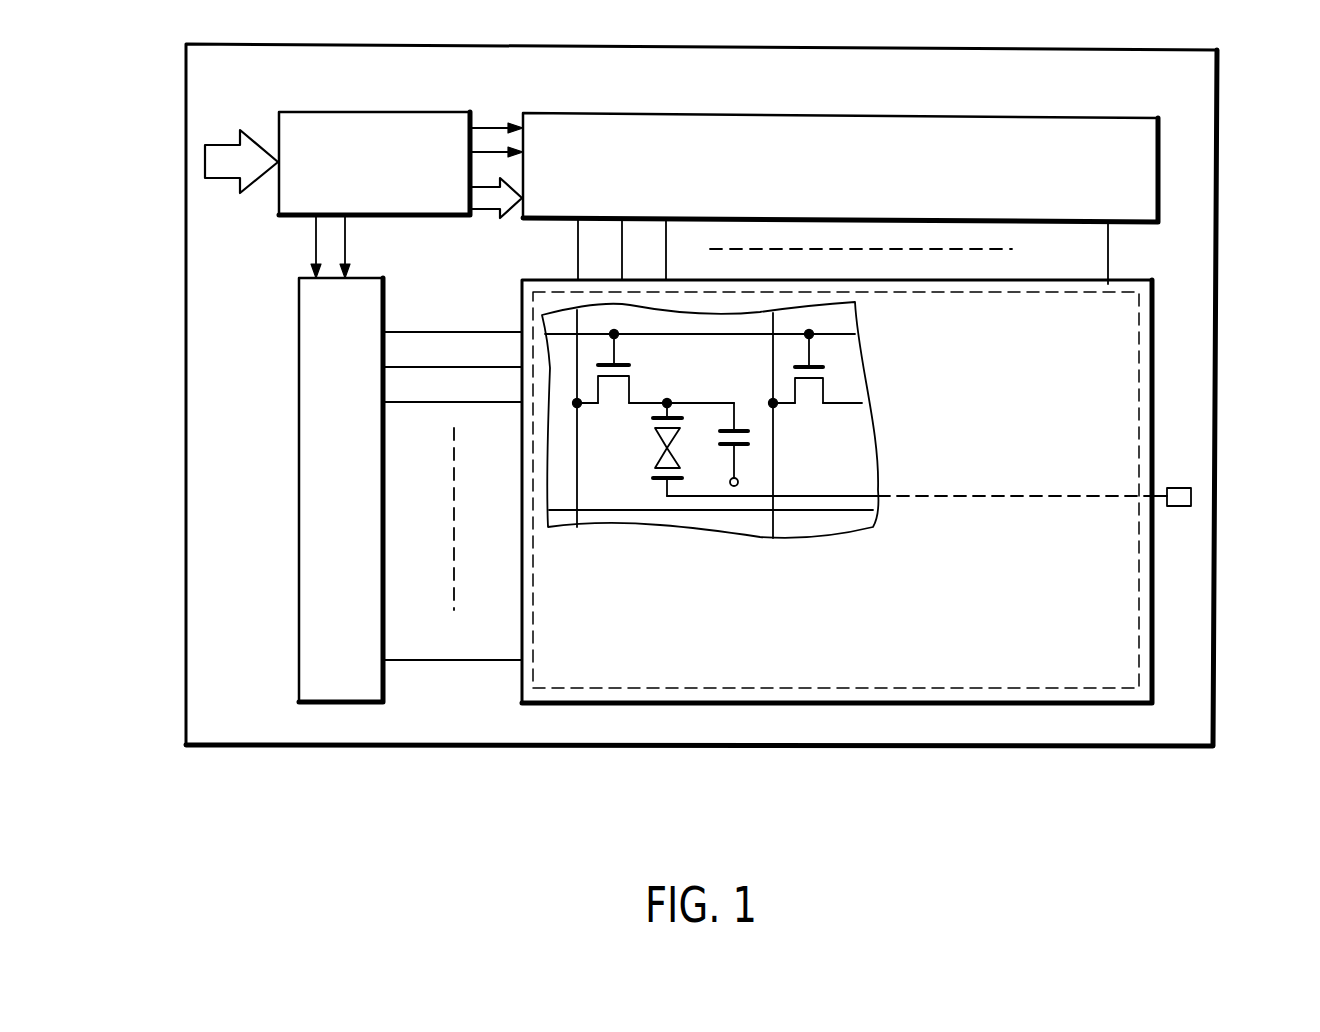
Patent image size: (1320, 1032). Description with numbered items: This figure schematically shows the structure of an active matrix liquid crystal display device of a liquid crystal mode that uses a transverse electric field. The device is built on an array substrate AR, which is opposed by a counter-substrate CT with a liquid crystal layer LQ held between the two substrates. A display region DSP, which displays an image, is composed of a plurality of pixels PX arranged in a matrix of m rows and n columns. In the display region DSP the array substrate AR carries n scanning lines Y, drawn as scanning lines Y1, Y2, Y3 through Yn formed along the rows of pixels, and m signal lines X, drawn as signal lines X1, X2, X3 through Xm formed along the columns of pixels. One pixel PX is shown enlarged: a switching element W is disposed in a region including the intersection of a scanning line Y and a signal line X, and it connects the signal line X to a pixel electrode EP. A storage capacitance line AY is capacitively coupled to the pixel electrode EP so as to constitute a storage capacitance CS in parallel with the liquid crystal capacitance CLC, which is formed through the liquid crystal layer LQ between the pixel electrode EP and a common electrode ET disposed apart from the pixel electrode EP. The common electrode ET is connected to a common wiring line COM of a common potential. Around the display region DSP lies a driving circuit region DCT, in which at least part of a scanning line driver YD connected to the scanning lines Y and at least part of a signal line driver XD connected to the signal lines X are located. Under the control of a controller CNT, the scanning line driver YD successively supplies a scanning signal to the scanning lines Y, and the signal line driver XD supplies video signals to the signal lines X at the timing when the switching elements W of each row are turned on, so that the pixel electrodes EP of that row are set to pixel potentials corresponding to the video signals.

The array substrate AR is at (1158, 723).
The controller CNT is at (372, 140).
The signal line driver XD is at (1098, 145).
The scanning line driver YD is at (299, 508).
The signal line X1 is at (561, 249).
The signal line X2 is at (604, 249).
The signal line X3 is at (649, 249).
The signal line Xm is at (1085, 253).
The scanning line Y1 is at (452, 317).
The scanning line Y2 is at (452, 352).
The scanning line Y3 is at (452, 387).
The scanning line Yn is at (452, 645).
The driving circuit region DCT is at (478, 722).
The display region DSP is at (900, 705).
The counter-substrate CT is at (1147, 443).
The common wiring line COM is at (1167, 503).
The pixel PX is at (622, 495).
The signal line X is at (578, 478).
The scanning line Y is at (835, 337).
The switching element W is at (636, 371).
The liquid crystal capacitance CLC is at (674, 469).
The pixel electrode EP is at (690, 422).
The liquid crystal layer LQ is at (677, 460).
The common electrode ET is at (658, 482).
The storage capacitance CS is at (762, 438).
The storage capacitance line AY is at (739, 482).